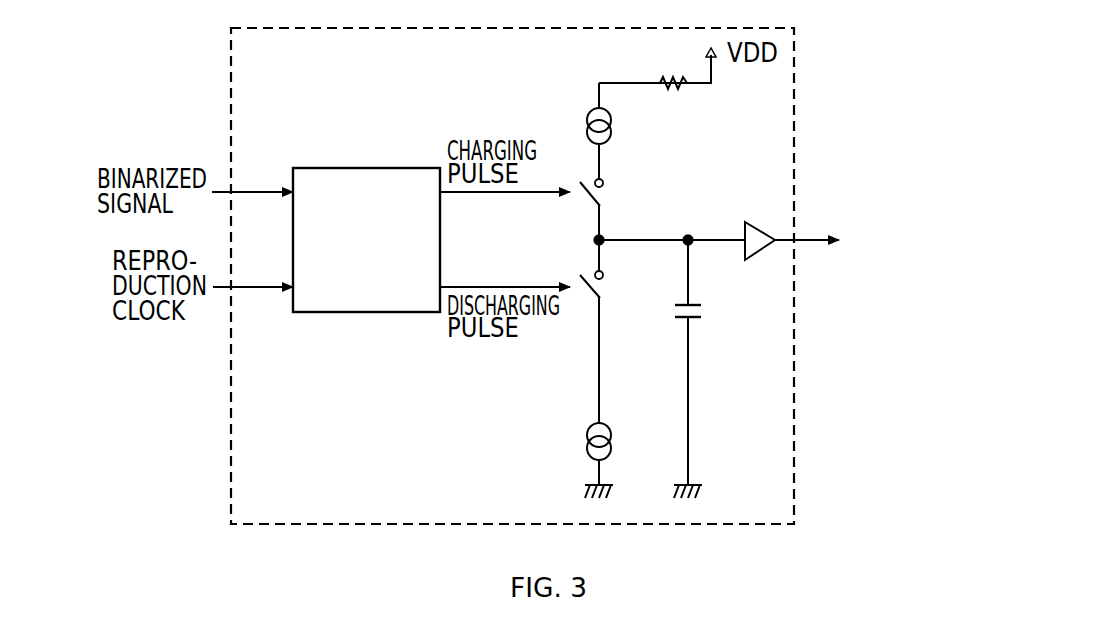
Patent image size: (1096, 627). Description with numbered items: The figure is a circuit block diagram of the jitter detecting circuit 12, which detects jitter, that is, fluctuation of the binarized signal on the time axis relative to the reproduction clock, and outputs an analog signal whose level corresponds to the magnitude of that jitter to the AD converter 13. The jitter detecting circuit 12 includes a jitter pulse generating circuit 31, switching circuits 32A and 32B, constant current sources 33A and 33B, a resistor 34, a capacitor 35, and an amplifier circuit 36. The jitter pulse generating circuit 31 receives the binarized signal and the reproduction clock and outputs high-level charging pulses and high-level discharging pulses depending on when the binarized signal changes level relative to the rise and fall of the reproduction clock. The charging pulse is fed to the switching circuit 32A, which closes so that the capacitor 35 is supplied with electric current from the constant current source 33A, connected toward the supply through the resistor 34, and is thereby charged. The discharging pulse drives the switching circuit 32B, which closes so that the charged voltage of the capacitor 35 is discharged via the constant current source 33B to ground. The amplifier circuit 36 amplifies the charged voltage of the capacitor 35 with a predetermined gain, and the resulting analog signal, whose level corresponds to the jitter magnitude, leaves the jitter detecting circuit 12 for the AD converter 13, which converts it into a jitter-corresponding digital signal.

The jitter detecting circuit 12 is at (795, 95).
The AD converter 13 is at (911, 241).
The jitter pulse generating circuit 31 is at (372, 167).
The switching circuit 32A is at (588, 198).
The switching circuit 32B is at (588, 292).
The constant current source 33A is at (587, 125).
The constant current source 33B is at (587, 444).
The resistor 34 is at (670, 90).
The capacitor 35 is at (702, 312).
The amplifier circuit 36 is at (760, 251).